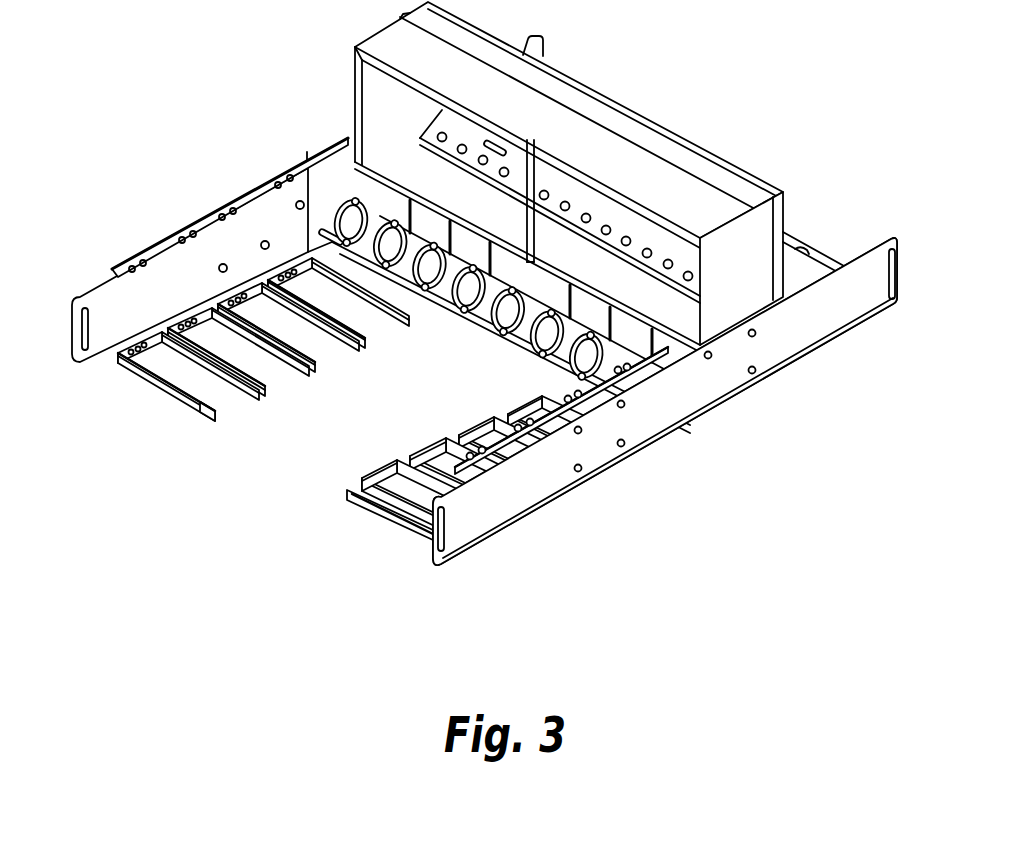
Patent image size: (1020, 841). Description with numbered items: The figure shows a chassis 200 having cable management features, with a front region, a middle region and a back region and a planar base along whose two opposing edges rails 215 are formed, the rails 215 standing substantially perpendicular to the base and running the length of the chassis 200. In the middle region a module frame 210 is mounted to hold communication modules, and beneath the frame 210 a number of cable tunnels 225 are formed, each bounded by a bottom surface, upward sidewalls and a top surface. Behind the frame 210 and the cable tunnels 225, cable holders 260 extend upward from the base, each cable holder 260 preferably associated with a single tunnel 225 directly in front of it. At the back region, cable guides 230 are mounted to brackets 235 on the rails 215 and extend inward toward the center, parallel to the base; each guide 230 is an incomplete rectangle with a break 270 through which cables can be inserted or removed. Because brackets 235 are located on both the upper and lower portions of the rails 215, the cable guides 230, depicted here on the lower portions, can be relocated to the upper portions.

The chassis 200 is at (482, 322).
The module frame 210 is at (598, 140).
The rails 215 is at (105, 297).
The cable tunnels 225 is at (432, 228).
The cable guides 230 is at (210, 387).
The brackets 235 is at (160, 257).
The cable holders 260 is at (467, 303).
The break 270 is at (222, 422).